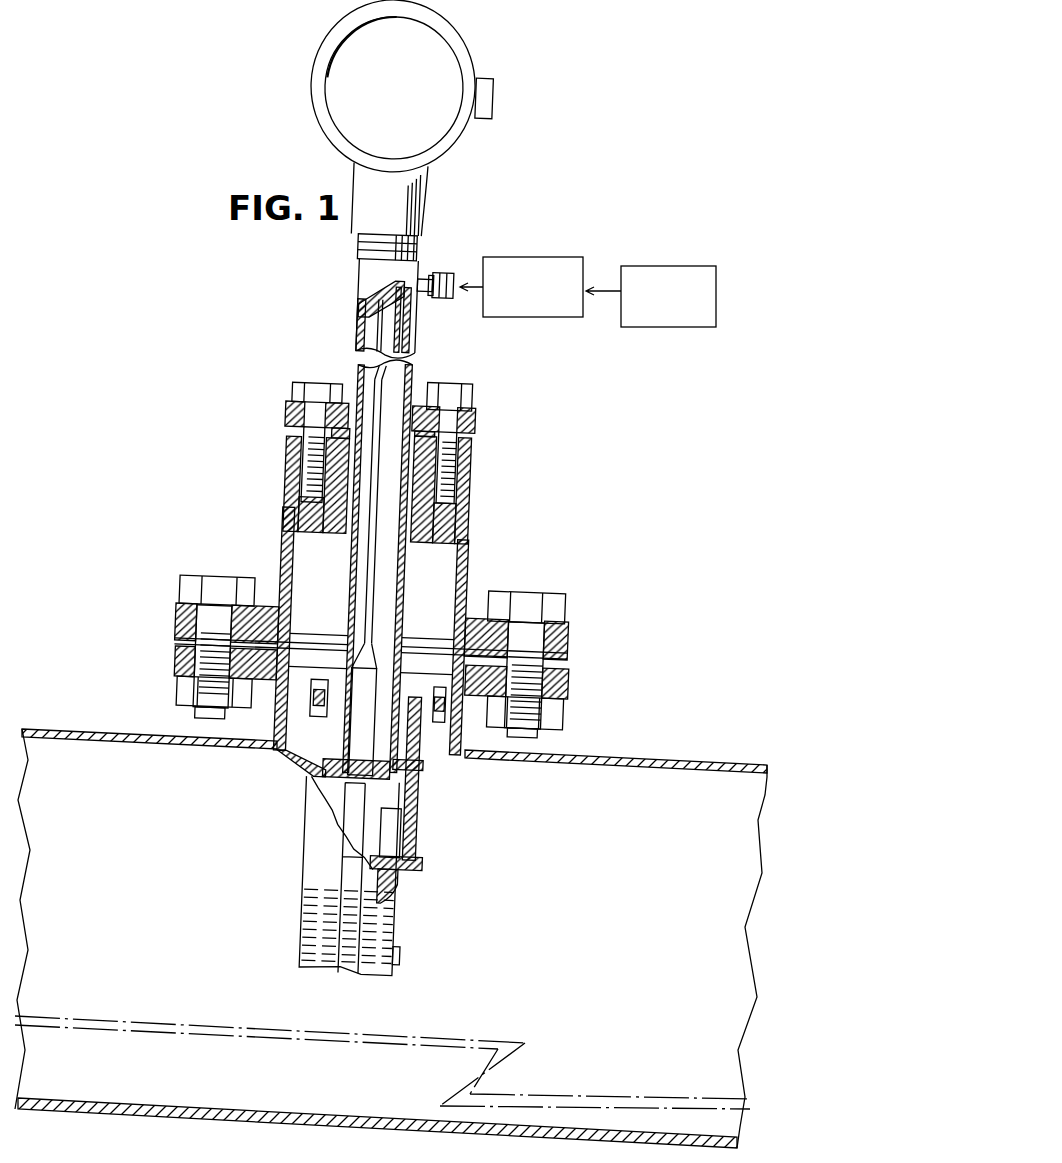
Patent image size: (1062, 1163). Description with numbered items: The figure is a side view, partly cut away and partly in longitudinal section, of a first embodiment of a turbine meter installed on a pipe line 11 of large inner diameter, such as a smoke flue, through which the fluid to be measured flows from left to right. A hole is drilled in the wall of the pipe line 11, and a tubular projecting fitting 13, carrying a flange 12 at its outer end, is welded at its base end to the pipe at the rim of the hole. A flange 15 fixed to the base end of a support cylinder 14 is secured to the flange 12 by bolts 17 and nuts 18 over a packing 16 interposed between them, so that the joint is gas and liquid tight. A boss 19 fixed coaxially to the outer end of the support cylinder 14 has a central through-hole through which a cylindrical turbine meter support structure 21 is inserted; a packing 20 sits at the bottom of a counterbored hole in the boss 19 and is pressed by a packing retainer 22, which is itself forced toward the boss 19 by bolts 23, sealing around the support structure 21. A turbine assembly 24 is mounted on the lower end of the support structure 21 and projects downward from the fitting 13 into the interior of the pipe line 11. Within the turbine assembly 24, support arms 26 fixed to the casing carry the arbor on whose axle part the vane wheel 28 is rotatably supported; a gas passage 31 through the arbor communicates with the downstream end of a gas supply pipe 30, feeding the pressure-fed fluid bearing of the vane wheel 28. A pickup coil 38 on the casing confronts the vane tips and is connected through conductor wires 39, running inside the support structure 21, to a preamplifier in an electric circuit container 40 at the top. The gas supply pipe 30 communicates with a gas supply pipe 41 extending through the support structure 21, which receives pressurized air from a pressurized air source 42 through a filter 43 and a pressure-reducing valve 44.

The pipe line 11 is at (78, 728).
The flange 12 is at (566, 679).
The tubular projecting fitting 13 is at (463, 737).
The support cylinder 14 is at (468, 548).
The flange 15 is at (568, 638).
The packing 16 is at (262, 592).
The bolts 17 is at (565, 604).
The nuts 18 is at (563, 713).
The boss 19 is at (470, 470).
The packing 20 is at (416, 530).
The turbine meter support structure 21 is at (412, 375).
The packing retainer 22 is at (476, 420).
The bolts 23 is at (466, 390).
The turbine assembly 24 is at (305, 963).
The support arms 26 is at (397, 893).
The vane wheel 28 is at (340, 797).
The gas supply pipe 30 is at (425, 812).
The gas passage 31 is at (422, 876).
The pickup coil 38 is at (350, 737).
The conductor wires 39 is at (360, 327).
The electric circuit container 40 is at (313, 100).
The gas supply pipe 41 is at (360, 375).
The pressurized air source 42 is at (650, 266).
The filter 43 is at (536, 258).
The pressure-reducing valve 44 is at (445, 270).